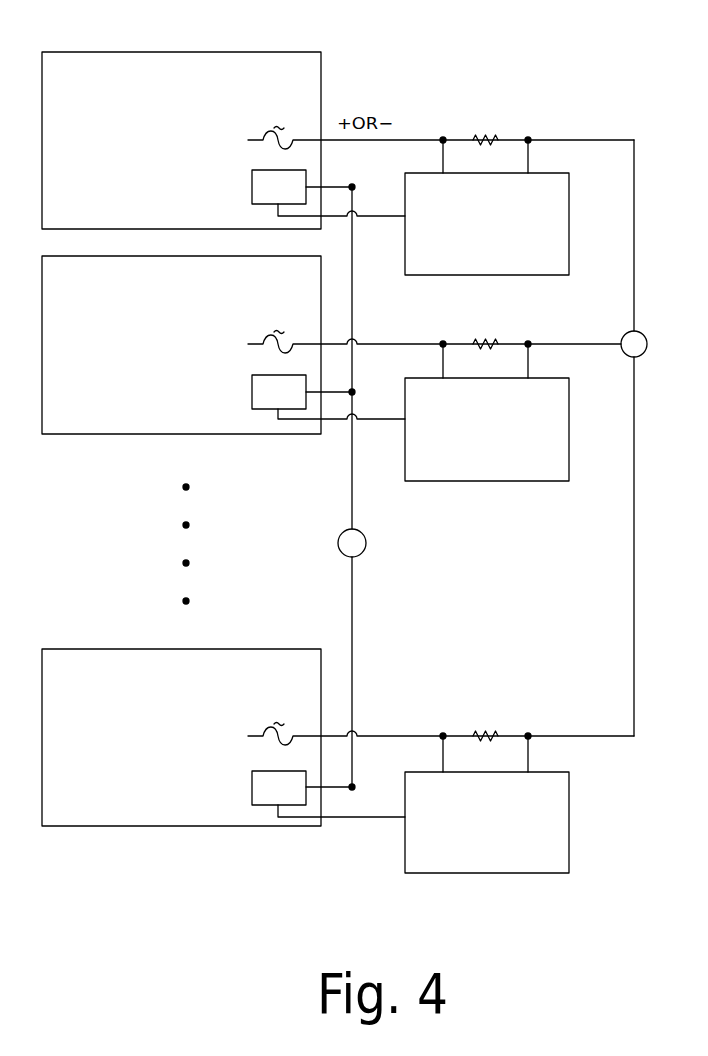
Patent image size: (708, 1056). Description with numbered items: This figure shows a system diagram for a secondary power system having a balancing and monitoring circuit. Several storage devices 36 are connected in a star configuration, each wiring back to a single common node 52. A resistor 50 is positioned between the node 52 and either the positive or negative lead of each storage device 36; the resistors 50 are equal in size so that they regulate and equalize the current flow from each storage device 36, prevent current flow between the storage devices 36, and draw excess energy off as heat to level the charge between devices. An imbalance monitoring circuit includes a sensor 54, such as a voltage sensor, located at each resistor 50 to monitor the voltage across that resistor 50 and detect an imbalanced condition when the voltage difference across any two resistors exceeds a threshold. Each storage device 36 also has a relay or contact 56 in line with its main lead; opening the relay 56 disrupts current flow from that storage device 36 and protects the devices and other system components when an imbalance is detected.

The storage device 36 is at (205, 52).
The resistor 50 is at (485, 134).
The node 52 is at (643, 354).
The sensor 54 is at (569, 203).
The relay 56 is at (252, 181).